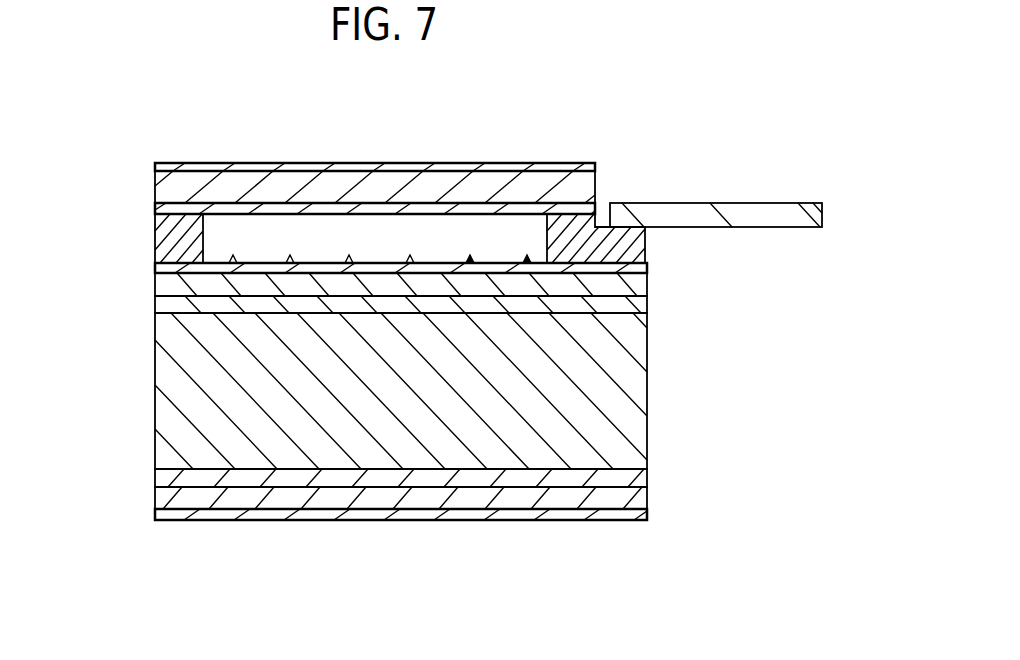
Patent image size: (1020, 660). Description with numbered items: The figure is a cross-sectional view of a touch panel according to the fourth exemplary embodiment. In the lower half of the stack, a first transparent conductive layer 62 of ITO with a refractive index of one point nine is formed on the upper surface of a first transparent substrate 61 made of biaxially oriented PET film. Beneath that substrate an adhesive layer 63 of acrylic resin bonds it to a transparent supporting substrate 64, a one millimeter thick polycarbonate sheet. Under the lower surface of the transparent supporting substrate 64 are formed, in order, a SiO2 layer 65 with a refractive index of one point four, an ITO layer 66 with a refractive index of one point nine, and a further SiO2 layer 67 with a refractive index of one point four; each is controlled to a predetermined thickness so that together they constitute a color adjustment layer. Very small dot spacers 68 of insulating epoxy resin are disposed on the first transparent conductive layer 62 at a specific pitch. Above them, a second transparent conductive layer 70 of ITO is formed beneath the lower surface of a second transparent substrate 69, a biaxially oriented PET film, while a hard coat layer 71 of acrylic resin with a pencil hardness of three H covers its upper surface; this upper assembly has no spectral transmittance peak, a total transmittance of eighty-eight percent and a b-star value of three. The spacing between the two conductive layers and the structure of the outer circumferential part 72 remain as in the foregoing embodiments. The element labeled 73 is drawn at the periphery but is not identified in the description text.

The first transparent substrate 61 is at (168, 286).
The first transparent conductive layer 62 is at (157, 268).
The adhesive layer 63 is at (157, 318).
The transparent supporting substrate 64 is at (172, 377).
The SiO2 layer 65 is at (165, 483).
The ITO layer 66 is at (243, 500).
The SiO2 layer 67 is at (308, 512).
The dot spacers 68 is at (410, 258).
The second transparent substrate 69 is at (240, 185).
The second transparent conductive layer 70 is at (318, 210).
The hard coat layer 71 is at (185, 166).
The outer circumferential part 72 is at (165, 228).
The lead bar 73 is at (780, 218).